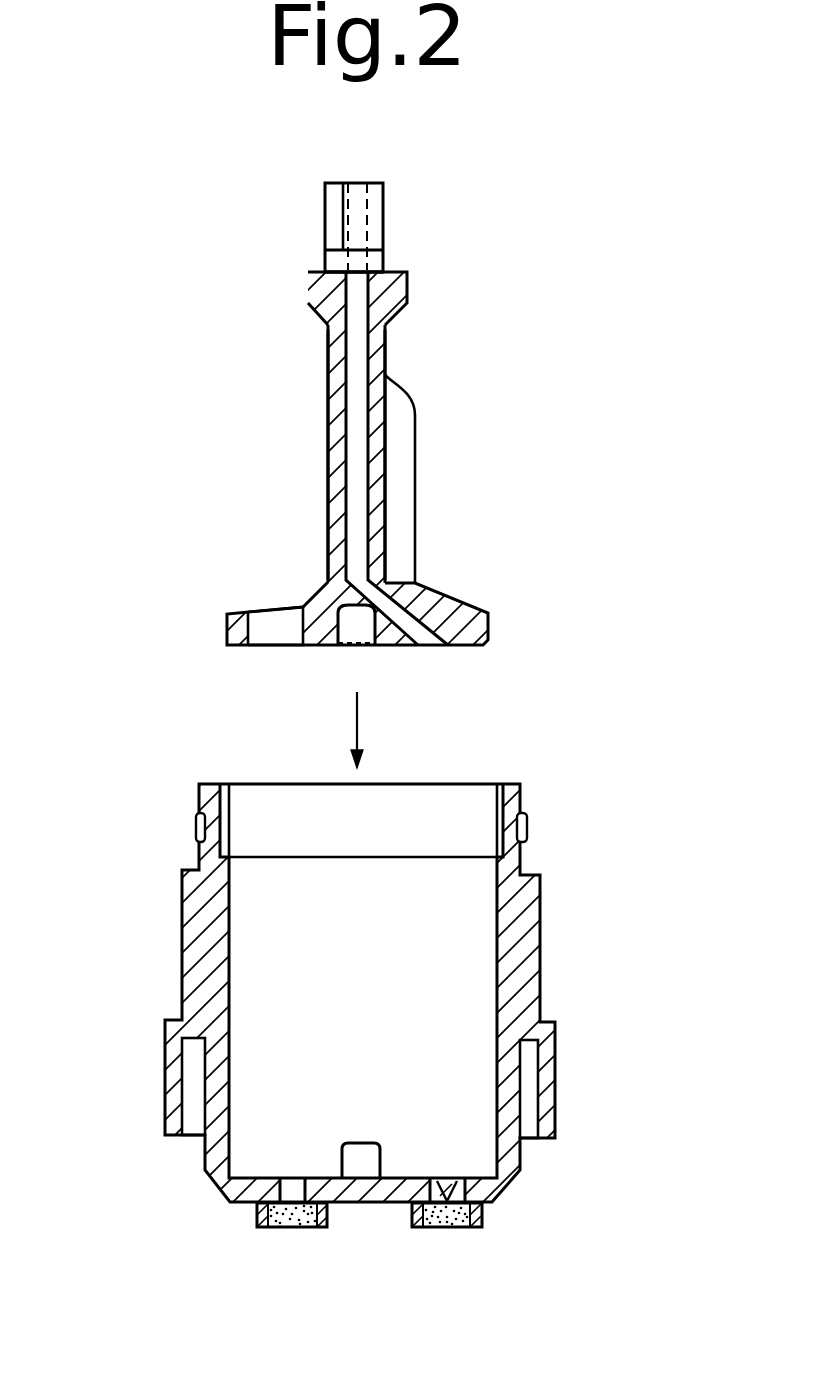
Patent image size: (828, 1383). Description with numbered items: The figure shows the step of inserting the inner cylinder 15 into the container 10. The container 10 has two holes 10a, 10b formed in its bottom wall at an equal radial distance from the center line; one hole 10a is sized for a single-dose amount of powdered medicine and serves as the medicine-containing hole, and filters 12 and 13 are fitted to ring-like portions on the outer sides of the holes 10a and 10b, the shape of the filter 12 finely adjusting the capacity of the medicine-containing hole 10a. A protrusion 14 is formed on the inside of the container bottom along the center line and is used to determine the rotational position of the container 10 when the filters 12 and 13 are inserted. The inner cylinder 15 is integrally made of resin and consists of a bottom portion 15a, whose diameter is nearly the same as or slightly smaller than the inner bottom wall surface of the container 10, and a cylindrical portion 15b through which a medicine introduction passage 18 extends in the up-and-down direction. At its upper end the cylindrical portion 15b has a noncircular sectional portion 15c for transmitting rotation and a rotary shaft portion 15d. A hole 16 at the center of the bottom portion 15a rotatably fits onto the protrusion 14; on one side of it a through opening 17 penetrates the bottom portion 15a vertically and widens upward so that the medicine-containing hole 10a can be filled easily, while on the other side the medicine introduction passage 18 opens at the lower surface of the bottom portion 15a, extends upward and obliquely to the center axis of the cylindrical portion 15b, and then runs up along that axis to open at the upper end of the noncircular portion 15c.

The container 10 is at (547, 982).
The medicine-containing hole 10a is at (443, 1190).
The hole 10b is at (289, 1190).
The filter 12 is at (443, 1228).
The filter 13 is at (282, 1228).
The protrusion 14 is at (360, 1150).
The inner cylinder 15 is at (397, 381).
The bottom portion 15a is at (227, 630).
The cylindrical portion 15b is at (328, 427).
The sectional portion 15c is at (376, 204).
The rotary shaft portion 15d is at (326, 260).
The hole 16 is at (380, 724).
The through opening 17 is at (278, 633).
The medicine introduction passage 18 is at (430, 633).